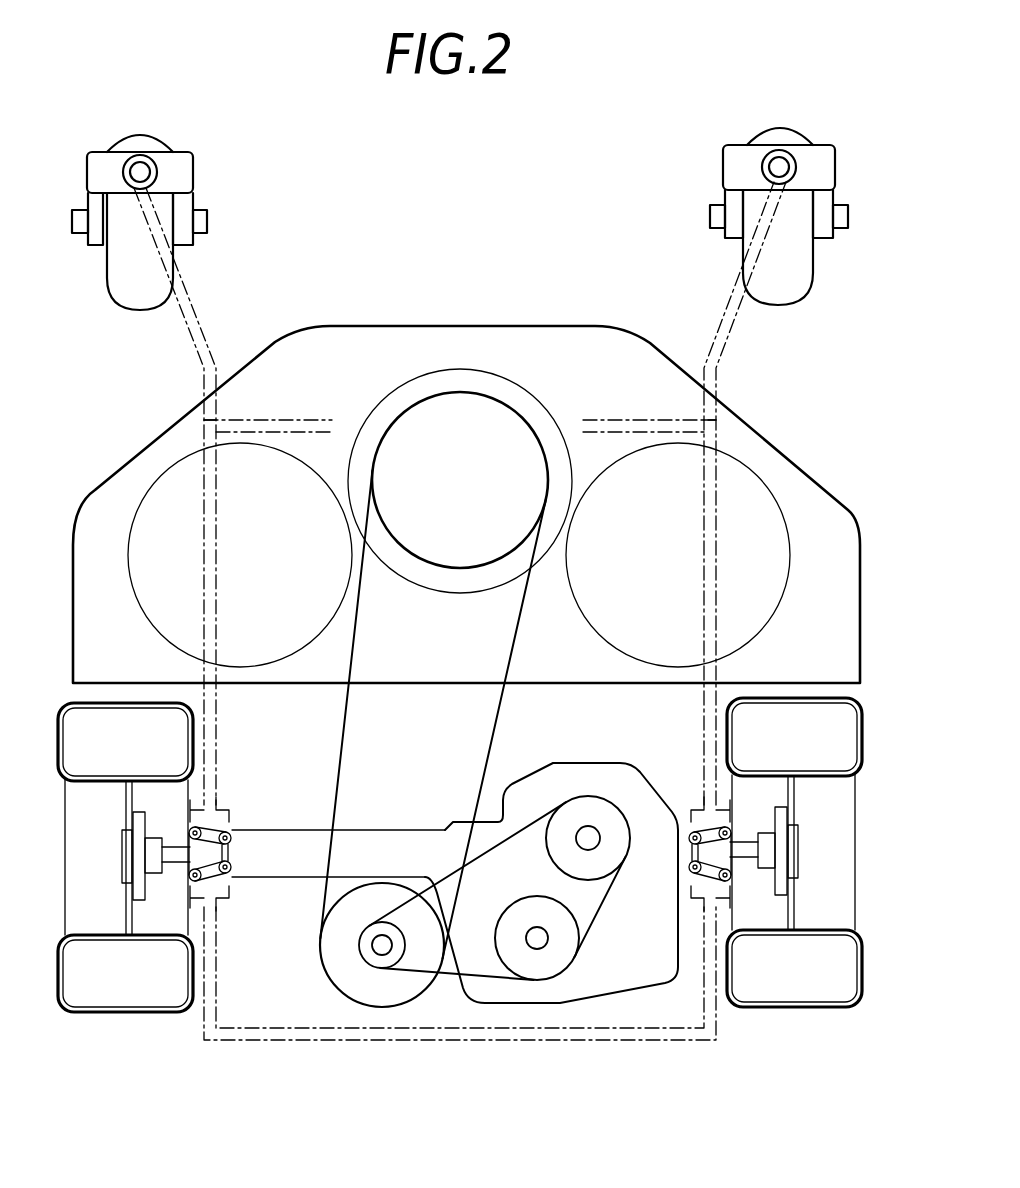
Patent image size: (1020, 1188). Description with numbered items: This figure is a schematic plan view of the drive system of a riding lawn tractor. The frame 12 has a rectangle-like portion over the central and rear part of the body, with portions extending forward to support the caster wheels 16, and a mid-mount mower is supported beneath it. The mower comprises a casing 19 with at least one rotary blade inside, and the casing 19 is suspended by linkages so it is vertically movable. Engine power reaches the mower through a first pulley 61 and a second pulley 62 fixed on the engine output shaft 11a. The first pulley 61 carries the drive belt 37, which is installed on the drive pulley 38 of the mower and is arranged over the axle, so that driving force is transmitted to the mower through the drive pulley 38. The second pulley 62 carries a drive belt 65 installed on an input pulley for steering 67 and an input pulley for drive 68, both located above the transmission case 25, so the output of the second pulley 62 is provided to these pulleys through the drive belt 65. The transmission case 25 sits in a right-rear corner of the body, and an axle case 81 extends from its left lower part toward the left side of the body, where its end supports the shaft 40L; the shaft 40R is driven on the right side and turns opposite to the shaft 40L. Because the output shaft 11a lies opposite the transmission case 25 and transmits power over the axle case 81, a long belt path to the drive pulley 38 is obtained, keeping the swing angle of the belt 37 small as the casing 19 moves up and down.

The frame 12 is at (726, 322).
The caster wheel 16 is at (133, 289).
The casing 19 is at (798, 475).
The drive pulley 38 is at (467, 441).
The drive belt 37 is at (348, 710).
The transmission case 25 is at (635, 780).
The axle case 81 is at (282, 838).
The first pulley 61 is at (345, 975).
The second pulley 62 is at (364, 957).
The output shaft 11a is at (364, 931).
The input pulley for drive 68 is at (575, 862).
The input pulley for steering 67 is at (554, 938).
The drive belt 65 is at (475, 978).
The shaft 40L is at (173, 853).
The shaft 40R is at (757, 837).